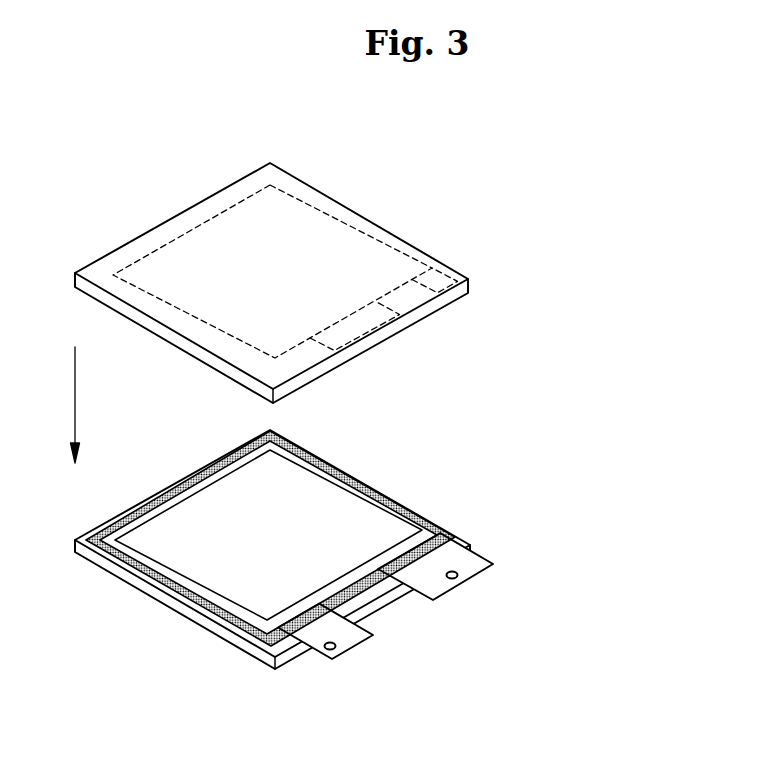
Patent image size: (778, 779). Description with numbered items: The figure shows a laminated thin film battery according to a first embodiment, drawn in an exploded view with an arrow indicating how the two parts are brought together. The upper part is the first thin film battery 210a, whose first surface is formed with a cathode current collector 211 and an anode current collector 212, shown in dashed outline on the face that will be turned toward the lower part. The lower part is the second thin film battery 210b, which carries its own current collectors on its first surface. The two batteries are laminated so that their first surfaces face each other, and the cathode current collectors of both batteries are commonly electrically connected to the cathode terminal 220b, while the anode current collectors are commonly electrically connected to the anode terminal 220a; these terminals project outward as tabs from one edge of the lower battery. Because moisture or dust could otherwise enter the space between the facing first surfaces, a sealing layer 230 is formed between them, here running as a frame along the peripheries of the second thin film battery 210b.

The first thin film battery 210a is at (363, 230).
The second thin film battery 210b is at (180, 607).
The cathode current collector 211 is at (449, 309).
The anode current collector 212 is at (330, 379).
The anode terminal 220a is at (313, 655).
The cathode terminal 220b is at (438, 583).
The sealing layer 230 is at (98, 548).